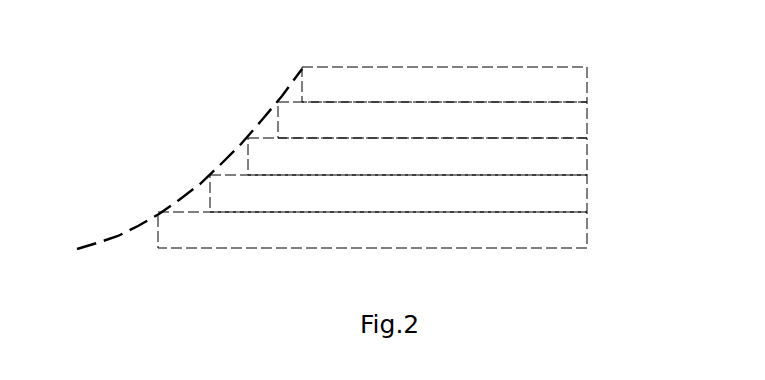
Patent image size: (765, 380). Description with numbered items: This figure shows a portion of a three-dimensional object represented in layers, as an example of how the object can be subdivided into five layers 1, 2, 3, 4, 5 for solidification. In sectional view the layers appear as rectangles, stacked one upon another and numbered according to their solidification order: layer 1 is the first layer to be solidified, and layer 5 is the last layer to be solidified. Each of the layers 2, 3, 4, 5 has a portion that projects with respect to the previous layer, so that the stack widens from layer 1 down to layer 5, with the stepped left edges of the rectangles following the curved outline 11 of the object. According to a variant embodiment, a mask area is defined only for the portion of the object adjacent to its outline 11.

The layer 1 is at (605, 85).
The layer 2 is at (605, 120).
The layer 3 is at (605, 156).
The layer 4 is at (605, 192).
The layer 5 is at (605, 227).
The outline 11 is at (118, 229).